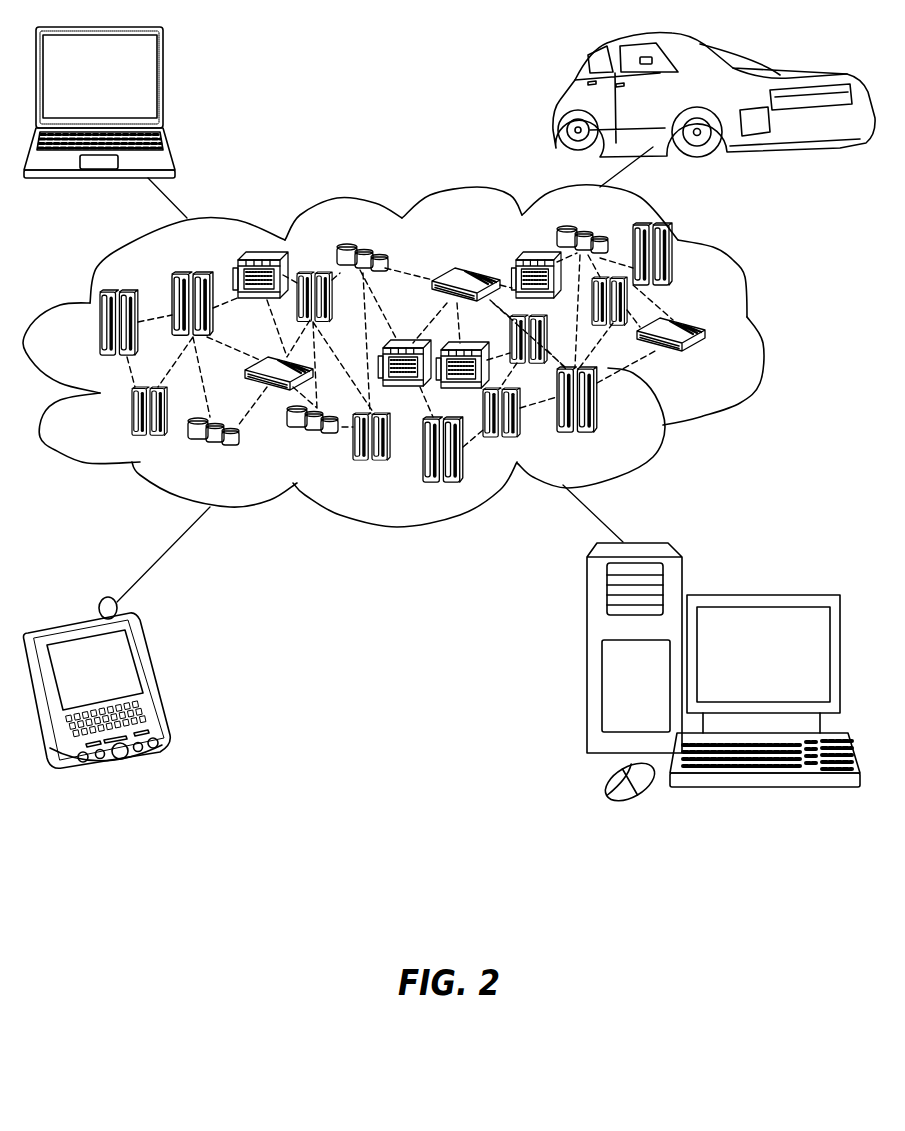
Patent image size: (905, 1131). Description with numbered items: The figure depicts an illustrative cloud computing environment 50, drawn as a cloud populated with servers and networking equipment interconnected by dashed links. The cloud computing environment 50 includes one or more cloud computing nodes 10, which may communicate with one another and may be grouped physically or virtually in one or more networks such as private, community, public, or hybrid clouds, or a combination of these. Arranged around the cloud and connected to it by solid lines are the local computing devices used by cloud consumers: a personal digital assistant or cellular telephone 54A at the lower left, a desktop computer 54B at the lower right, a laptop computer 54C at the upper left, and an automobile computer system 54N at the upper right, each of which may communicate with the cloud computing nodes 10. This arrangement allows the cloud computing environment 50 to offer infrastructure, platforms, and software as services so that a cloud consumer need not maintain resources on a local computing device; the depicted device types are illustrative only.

The cloud computing environment 50 is at (763, 333).
The cloud computing nodes 10 is at (708, 361).
The personal digital assistant (PDA) or cellular telephone 54A is at (155, 682).
The desktop computer 54B is at (760, 595).
The laptop computer 54C is at (163, 83).
The automobile computer system 54N is at (560, 99).